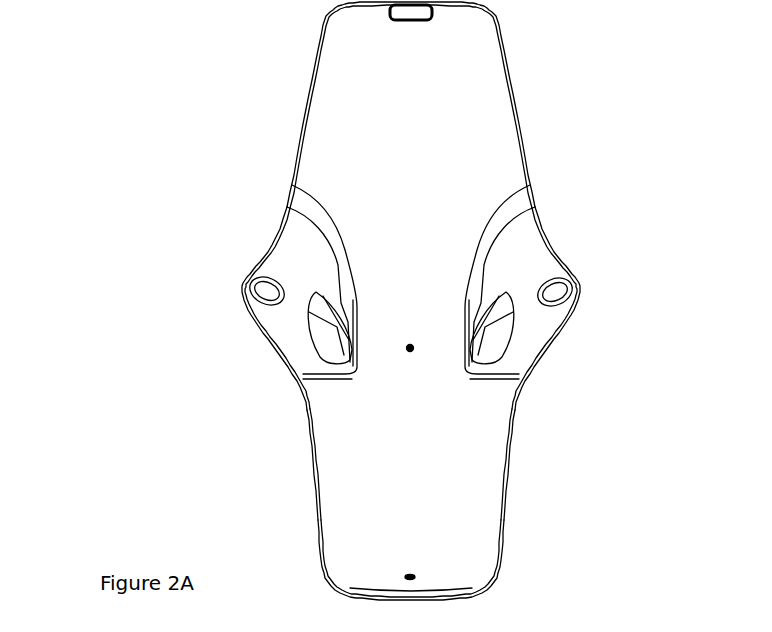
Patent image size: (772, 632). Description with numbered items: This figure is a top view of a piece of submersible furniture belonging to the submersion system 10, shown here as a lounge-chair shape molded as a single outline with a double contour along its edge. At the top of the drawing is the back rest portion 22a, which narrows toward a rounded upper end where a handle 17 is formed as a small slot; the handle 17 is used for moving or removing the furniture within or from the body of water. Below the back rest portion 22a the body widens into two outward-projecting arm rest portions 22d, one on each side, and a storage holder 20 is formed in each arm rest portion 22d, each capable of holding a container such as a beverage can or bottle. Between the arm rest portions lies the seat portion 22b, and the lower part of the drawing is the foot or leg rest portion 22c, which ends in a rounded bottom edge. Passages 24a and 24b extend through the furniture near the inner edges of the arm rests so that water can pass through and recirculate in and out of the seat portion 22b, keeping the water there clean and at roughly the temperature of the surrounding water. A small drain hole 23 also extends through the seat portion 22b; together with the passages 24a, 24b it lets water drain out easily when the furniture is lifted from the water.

The submersion system 10 is at (365, 301).
The handle 17 is at (417, 20).
The storage holder 20 is at (247, 283).
The back rest portion 22a is at (470, 140).
The seat portion 22b is at (372, 383).
The foot or leg rest portion 22c is at (463, 493).
The arm rest portion 22d is at (543, 263).
The drain hole 23 is at (411, 352).
The passage 24a is at (321, 356).
The passage 24b is at (515, 364).